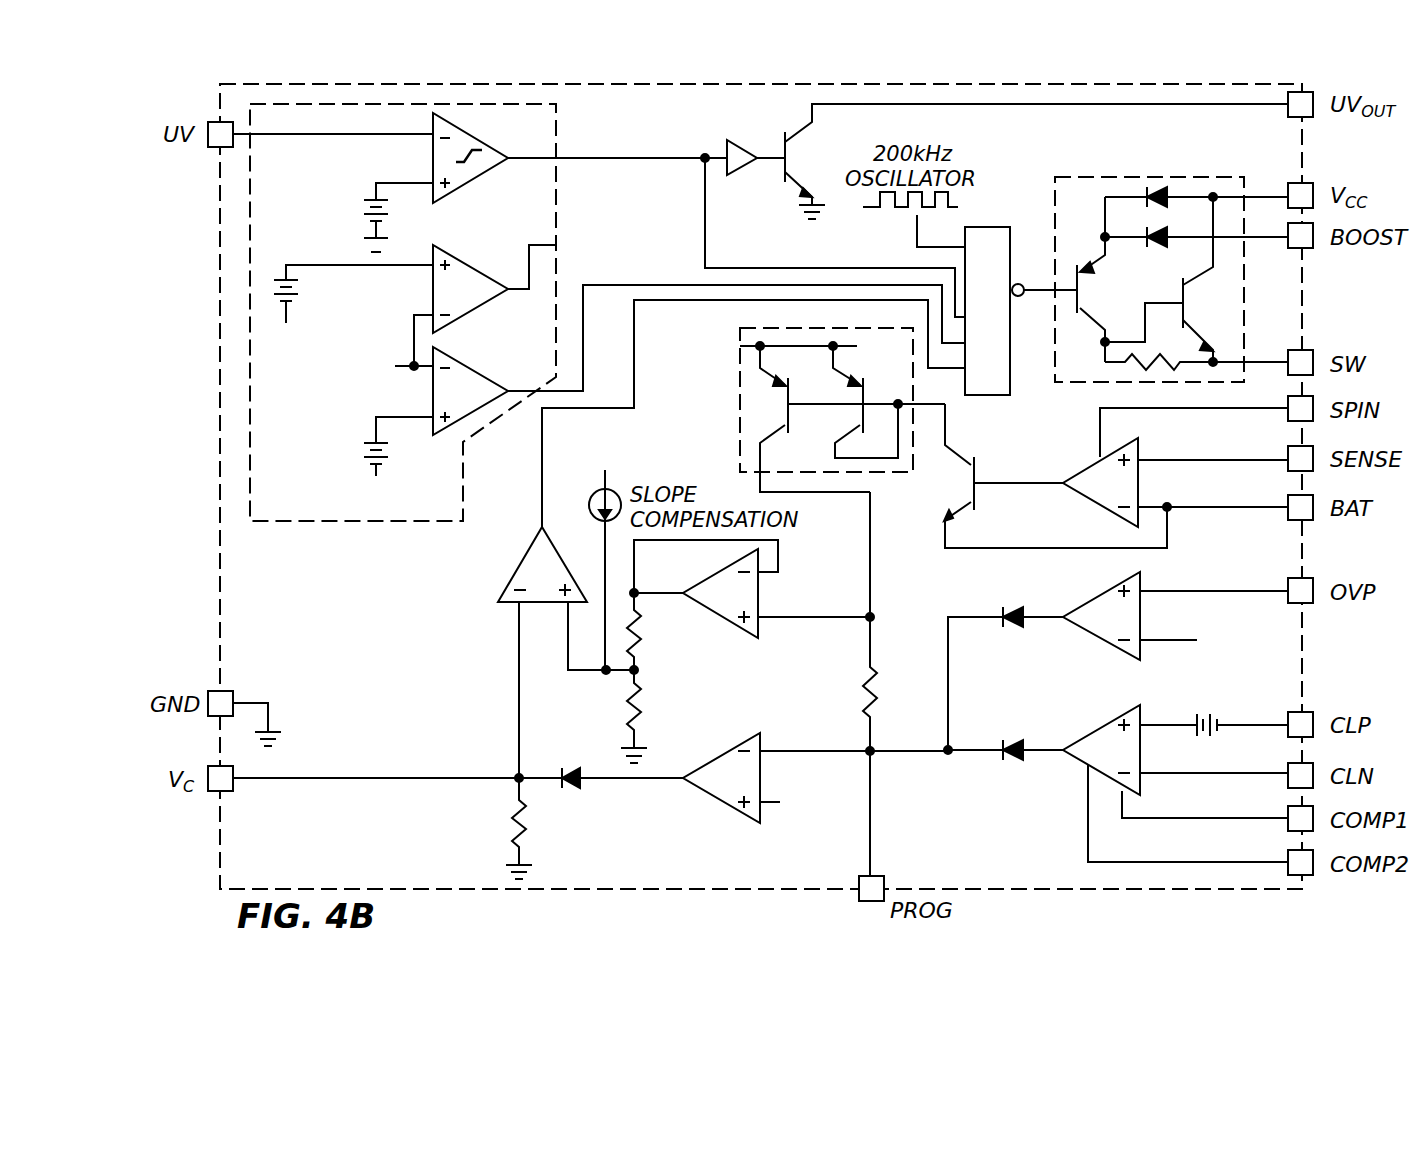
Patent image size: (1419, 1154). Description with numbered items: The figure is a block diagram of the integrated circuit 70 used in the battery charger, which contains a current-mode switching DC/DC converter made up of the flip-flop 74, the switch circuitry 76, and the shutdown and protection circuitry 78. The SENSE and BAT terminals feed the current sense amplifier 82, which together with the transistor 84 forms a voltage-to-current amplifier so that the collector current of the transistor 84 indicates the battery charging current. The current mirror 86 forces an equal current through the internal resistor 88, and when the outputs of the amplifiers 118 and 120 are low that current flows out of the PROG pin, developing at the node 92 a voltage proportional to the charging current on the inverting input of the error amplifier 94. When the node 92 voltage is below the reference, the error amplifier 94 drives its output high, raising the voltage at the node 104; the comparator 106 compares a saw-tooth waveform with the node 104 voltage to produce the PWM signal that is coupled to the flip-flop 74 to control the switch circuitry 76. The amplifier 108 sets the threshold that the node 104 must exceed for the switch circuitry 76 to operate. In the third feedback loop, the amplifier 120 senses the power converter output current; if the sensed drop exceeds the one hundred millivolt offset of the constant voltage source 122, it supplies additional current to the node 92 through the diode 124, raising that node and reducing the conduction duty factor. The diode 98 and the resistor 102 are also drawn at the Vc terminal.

The integrated circuit 70 is at (202, 840).
The flip-flop 74 is at (990, 226).
The switch circuitry 76 is at (1133, 177).
The shutdown and protection circuitry 78 is at (556, 185).
The current sense amplifier 82 is at (1141, 470).
The transistor 84 is at (978, 497).
The current mirror 86 is at (740, 395).
The internal resistor 88 is at (862, 687).
The node 92 is at (873, 749).
The error amplifier 94 is at (737, 753).
The diode 98 is at (575, 790).
The resistor 102 is at (513, 825).
The node 104 is at (517, 776).
The comparator 106 is at (505, 579).
The amplifier 108 is at (727, 619).
The amplifier 118 is at (1141, 584).
The amplifier 120 is at (1076, 765).
The constant voltage source 122 is at (1220, 718).
The diode 124 is at (1012, 738).